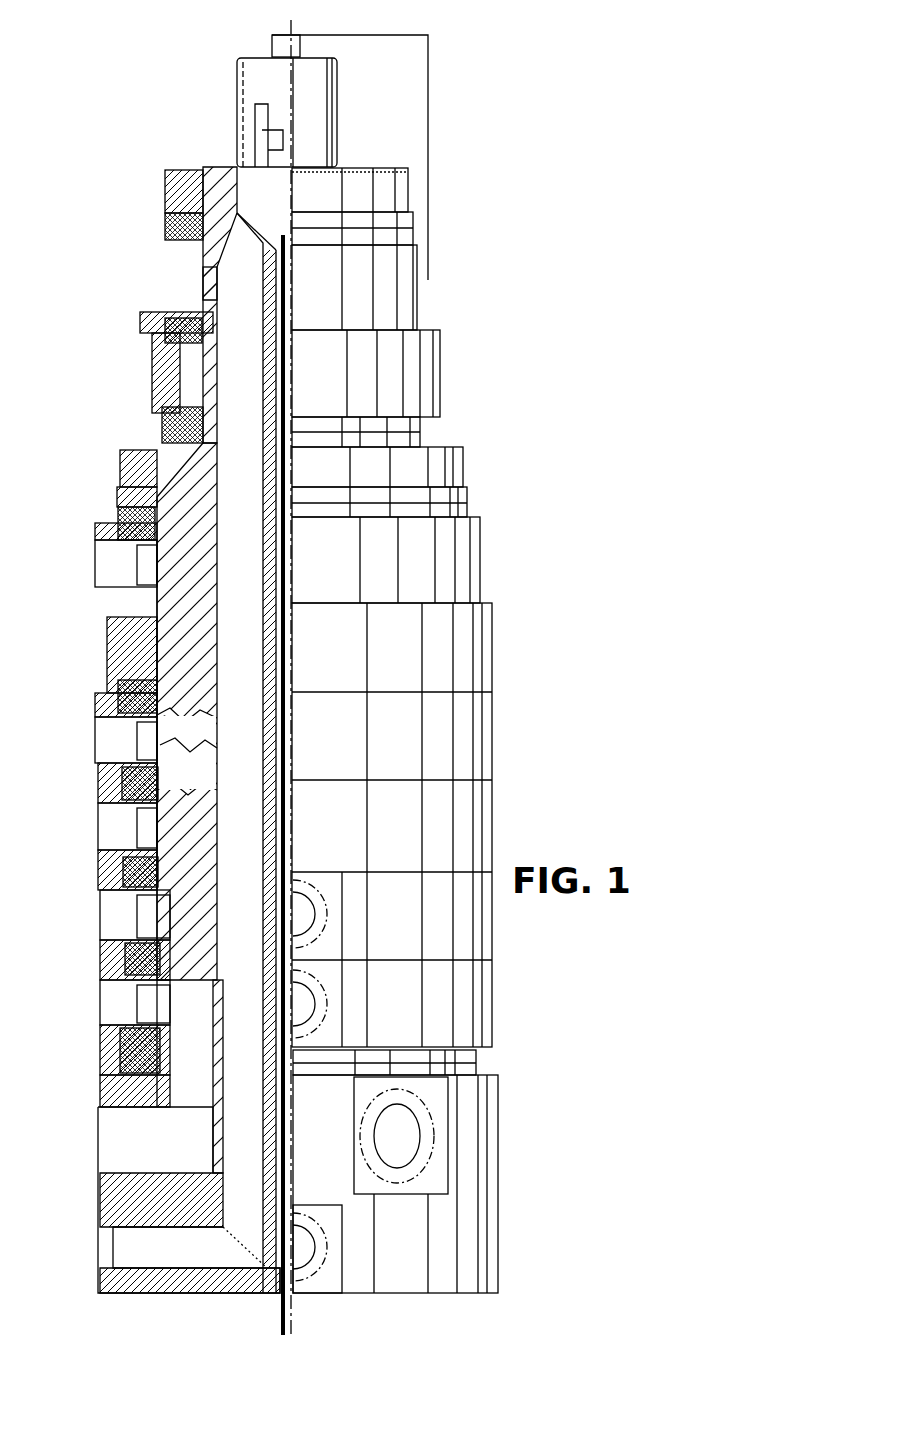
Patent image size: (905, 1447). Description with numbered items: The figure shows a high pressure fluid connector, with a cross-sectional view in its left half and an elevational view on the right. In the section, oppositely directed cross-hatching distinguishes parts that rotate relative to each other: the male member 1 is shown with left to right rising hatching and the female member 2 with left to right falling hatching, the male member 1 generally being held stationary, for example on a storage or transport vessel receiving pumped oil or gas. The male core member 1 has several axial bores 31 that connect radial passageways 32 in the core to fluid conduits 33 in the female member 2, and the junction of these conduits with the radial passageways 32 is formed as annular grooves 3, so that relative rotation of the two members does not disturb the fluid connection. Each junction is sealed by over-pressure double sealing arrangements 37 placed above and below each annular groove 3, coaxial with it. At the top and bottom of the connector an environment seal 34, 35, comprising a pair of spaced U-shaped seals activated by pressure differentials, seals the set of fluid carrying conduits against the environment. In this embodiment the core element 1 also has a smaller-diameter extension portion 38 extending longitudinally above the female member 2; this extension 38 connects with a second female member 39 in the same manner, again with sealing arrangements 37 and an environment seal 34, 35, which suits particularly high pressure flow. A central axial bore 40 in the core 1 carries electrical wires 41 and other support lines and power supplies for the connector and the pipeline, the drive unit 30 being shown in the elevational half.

The male member 1 is at (172, 470).
The female member 2 is at (112, 533).
The annular grooves 3 is at (148, 830).
The motor drive 30 is at (410, 1145).
The axial bores 31 is at (210, 745).
The radial passageways 32 is at (152, 750).
The fluid conduits 33 is at (95, 562).
The environment seal 34 is at (160, 430).
The environment seal 35 is at (166, 232).
The sealing arrangements 37 is at (170, 345).
The extension portion 38 is at (218, 185).
The second female member 39 is at (140, 318).
The central axial bore 40 is at (295, 1290).
The electrical wires 41 is at (281, 1317).